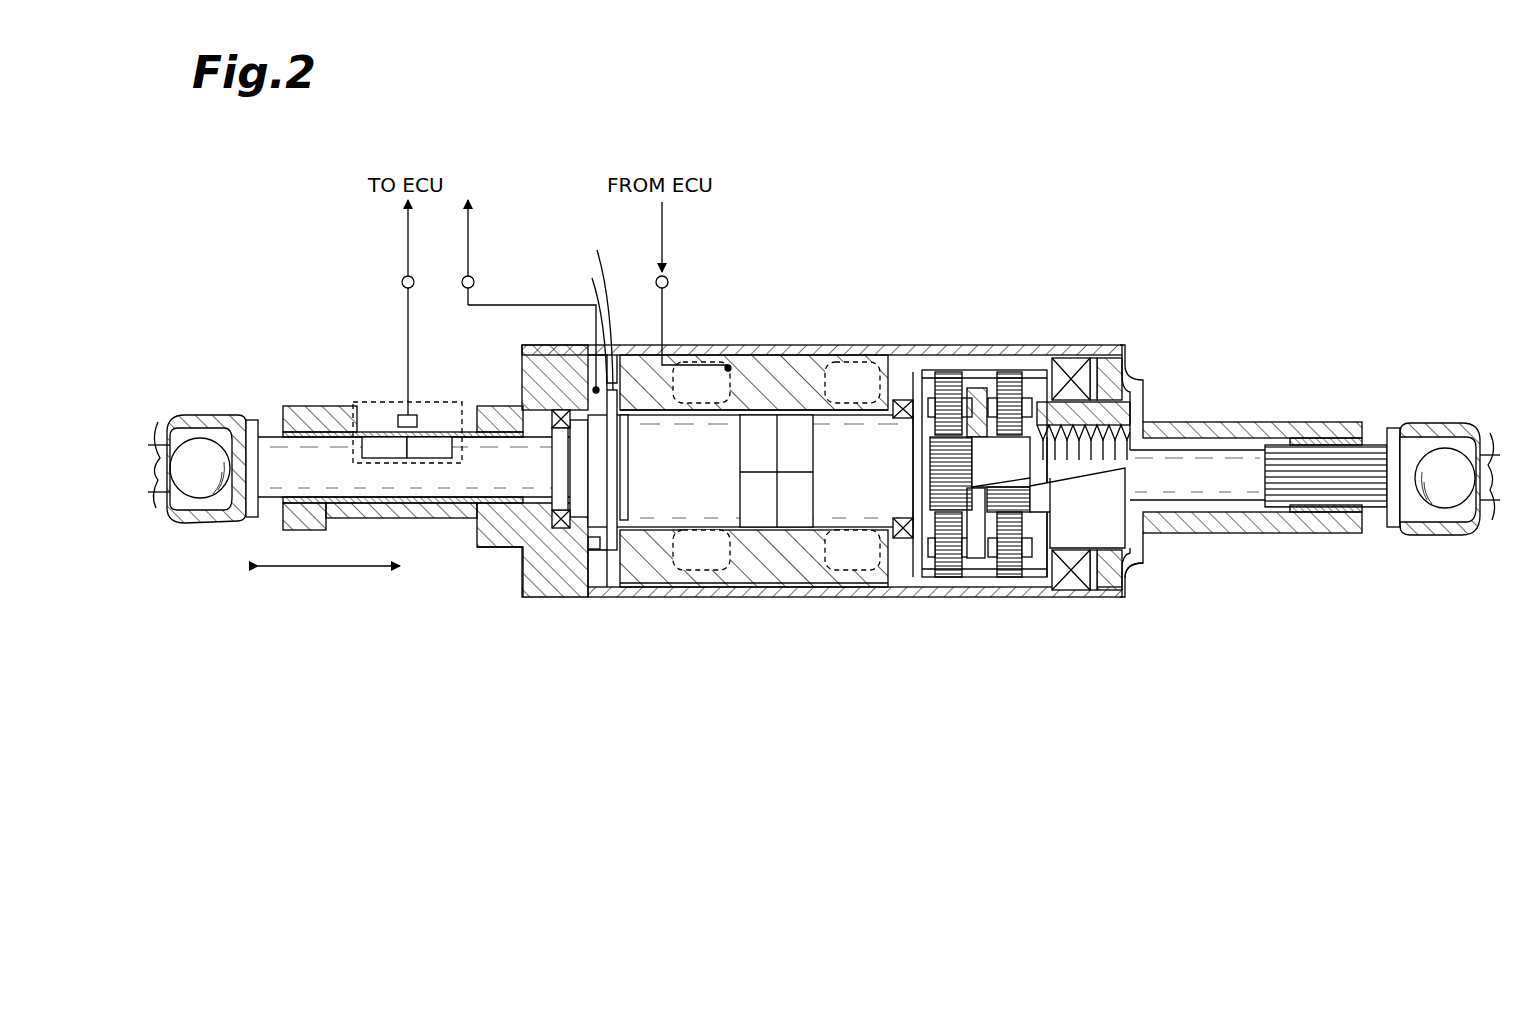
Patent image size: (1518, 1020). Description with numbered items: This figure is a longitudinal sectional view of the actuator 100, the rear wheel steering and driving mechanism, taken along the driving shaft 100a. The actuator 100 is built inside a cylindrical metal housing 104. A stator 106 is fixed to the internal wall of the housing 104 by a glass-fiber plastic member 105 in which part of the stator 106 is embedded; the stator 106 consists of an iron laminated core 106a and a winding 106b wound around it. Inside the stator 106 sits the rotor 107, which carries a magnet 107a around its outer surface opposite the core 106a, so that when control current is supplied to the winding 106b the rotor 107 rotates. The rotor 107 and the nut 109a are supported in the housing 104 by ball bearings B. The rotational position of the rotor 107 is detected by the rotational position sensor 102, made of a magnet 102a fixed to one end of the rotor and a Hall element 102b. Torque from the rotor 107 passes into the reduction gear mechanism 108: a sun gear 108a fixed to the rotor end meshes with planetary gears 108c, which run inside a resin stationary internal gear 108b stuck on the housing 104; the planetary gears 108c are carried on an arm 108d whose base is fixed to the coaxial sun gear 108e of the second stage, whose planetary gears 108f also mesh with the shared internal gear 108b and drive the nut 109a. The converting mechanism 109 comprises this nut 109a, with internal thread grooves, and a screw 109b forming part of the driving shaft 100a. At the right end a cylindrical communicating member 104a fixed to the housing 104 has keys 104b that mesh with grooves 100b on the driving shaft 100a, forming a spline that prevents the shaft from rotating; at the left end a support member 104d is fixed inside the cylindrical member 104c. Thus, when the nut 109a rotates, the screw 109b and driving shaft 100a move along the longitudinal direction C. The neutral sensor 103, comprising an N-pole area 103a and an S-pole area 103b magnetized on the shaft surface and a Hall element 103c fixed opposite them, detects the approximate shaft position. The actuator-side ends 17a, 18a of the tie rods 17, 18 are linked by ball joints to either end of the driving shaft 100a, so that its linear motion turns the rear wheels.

The tie rod 17 is at (168, 440).
The actuator-side end of tie rod 17a is at (200, 445).
The tie rod 18 is at (1490, 455).
The actuator-side end of tie rod 18a is at (1440, 450).
The actuator 100 is at (912, 168).
The driving shaft 100a is at (285, 440).
The grooves 100b is at (1310, 505).
The rotational position sensor 102 is at (536, 236).
The magnet 102a is at (577, 314).
The Hall element 102b is at (574, 328).
The neutral sensor 103 is at (372, 402).
The N-pole area 103a is at (458, 452).
The S-pole area 103b is at (358, 452).
The Hall element 103c is at (412, 415).
The housing 104 is at (979, 348).
The cylindrical communicating member 104a is at (1200, 535).
The keys 104b is at (1345, 436).
The cylindrical member 104c is at (490, 550).
The support member 104d is at (318, 428).
The plastic member 105 is at (665, 587).
The stator 106 is at (880, 252).
The laminated core 106a is at (872, 377).
The winding 106b is at (815, 372).
The rotor 107 is at (848, 512).
The magnet 107a is at (760, 512).
The reduction gear mechanism 108 is at (972, 662).
The sun gear 108a is at (922, 500).
The stationary internal gear 108b is at (1002, 372).
The planetary gears 108c is at (946, 372).
The arm 108d is at (1010, 380).
The sun gear 108e is at (1040, 580).
The planetary gears 108f is at (1003, 580).
The converting mechanism 109 is at (1092, 645).
The nut 109a is at (1110, 545).
The screw 109b is at (1128, 437).
The ball bearing B is at (563, 350).
The longitudinal direction C is at (330, 572).